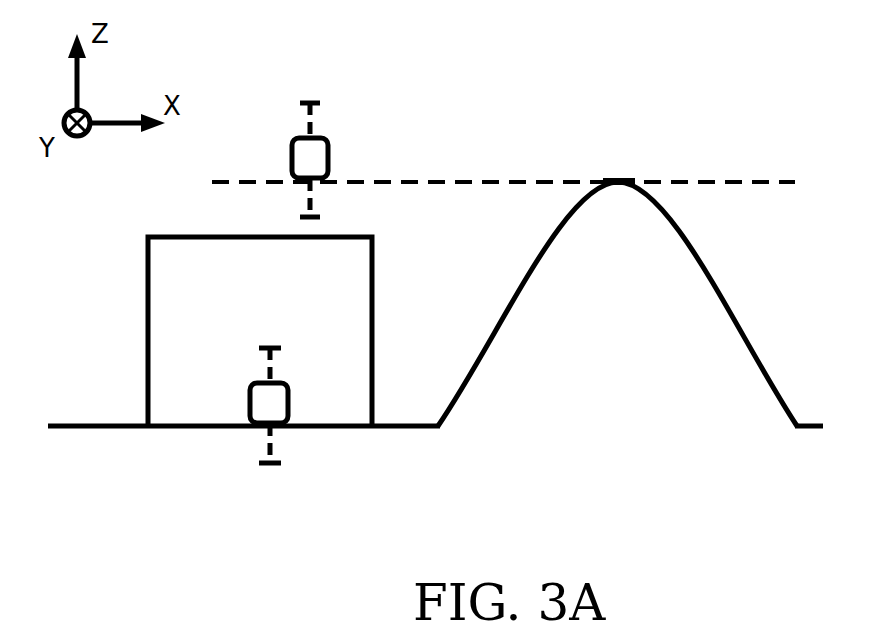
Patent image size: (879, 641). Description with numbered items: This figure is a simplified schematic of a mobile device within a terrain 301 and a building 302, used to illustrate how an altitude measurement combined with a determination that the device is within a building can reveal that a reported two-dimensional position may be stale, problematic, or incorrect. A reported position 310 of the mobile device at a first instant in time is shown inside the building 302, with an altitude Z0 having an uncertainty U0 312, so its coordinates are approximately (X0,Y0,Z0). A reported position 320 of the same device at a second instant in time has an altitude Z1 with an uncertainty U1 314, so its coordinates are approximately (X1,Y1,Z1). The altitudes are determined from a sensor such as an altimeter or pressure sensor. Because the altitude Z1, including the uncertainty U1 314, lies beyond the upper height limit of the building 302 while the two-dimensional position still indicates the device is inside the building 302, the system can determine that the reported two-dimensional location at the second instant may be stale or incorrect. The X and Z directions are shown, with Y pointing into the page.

The terrain 301 is at (733, 317).
The building 302 is at (229, 290).
The reported position 310 is at (260, 413).
The uncertainty U0 312 is at (265, 358).
The uncertainty U1 314 is at (303, 108).
The reported position 320 is at (330, 155).